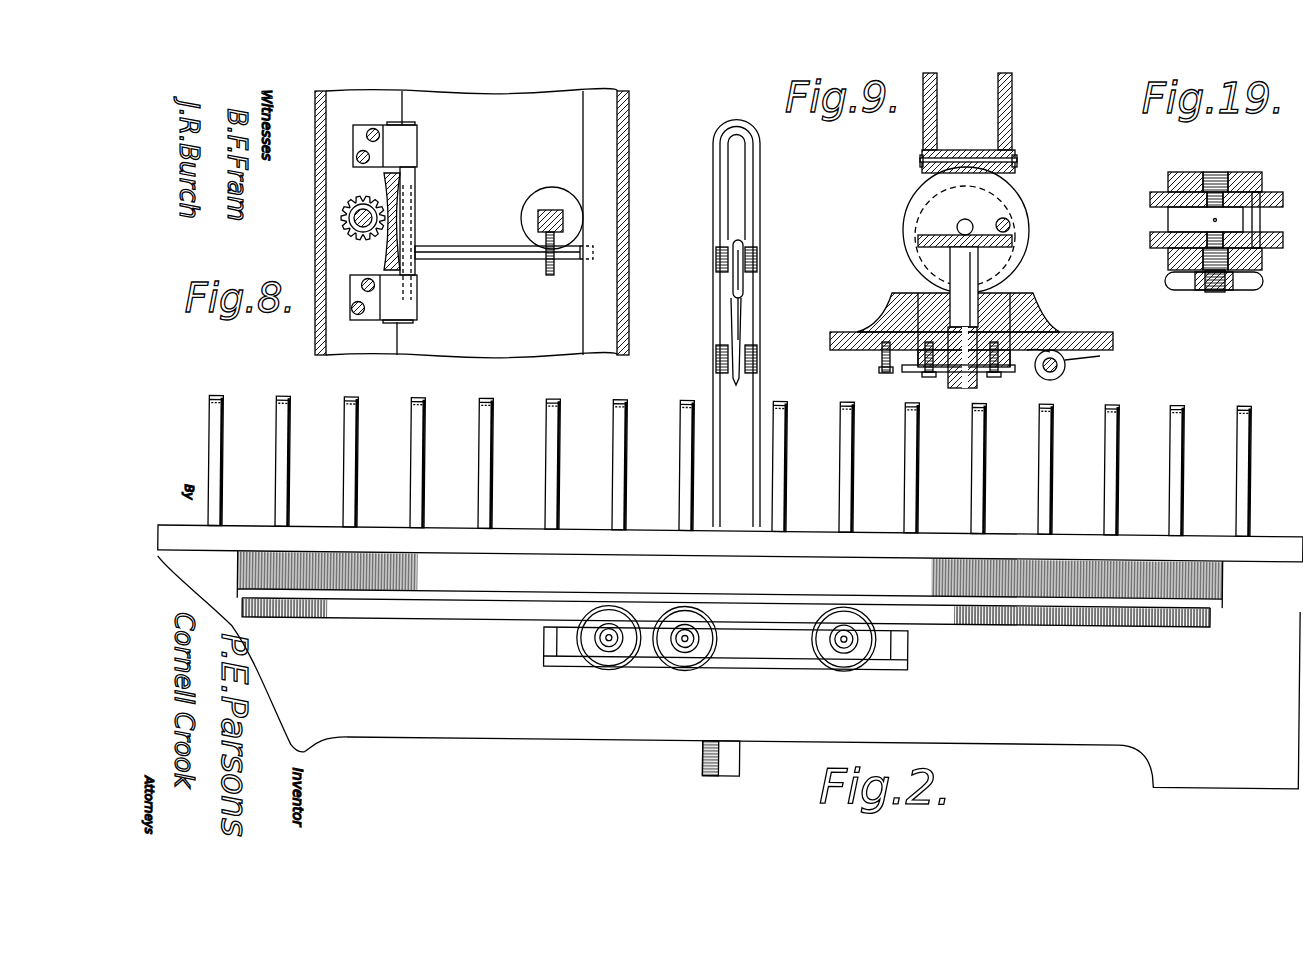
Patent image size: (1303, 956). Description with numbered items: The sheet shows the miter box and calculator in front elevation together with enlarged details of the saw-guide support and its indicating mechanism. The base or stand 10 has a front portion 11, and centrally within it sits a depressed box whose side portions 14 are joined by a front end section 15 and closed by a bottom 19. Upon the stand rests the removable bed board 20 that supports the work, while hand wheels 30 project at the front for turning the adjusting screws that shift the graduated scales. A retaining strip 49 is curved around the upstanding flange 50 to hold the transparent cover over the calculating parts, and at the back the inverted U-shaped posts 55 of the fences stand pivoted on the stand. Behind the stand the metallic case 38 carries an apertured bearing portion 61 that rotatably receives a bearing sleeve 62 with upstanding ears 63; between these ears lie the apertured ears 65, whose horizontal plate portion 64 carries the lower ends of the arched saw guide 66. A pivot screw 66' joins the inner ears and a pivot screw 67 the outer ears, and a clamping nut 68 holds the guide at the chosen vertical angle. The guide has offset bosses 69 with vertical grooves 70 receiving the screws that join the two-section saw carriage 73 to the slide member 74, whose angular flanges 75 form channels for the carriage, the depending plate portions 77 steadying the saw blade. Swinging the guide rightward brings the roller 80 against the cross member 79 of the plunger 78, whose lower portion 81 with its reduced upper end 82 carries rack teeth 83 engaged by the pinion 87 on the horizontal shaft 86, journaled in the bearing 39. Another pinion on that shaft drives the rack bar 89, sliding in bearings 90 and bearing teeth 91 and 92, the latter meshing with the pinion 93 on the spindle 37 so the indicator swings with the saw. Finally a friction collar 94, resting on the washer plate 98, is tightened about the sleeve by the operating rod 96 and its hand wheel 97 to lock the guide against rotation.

In FIG. 2, the base or stand 10 is at (517, 748).
In FIG. 2, the front portion 11 is at (1072, 714).
In FIG. 2, the side portions 14 is at (550, 625).
In FIG. 2, the front end section 15 is at (768, 644).
In FIG. 2, the bottom 19 is at (799, 650).
In FIG. 2, the bed board 20 is at (377, 531).
In FIG. 2, the hand wheels 30 is at (605, 664).
In FIG. 8, the spindle or shaft 37 is at (347, 208).
In FIG. 8, the metallic case or housing 38 is at (563, 323).
In FIG. 9, the metallic case or housing 38 is at (845, 332).
In FIG. 8, the bearing 39 is at (603, 233).
In FIG. 2, the retaining strip 49 is at (730, 589).
In FIG. 2, the upstanding flange 50 is at (448, 610).
In FIG. 2, the posts 55 is at (484, 438).
In FIG. 9, the bearing portion 61 is at (1038, 328).
In FIG. 9, the bearing sleeve 62 is at (1003, 322).
In FIG. 9, the ears 63 is at (928, 288).
In FIG. 19, the ears 63 is at (1255, 178).
In FIG. 9, the horizontal plate portion 64 is at (967, 148).
In FIG. 9, the apertured ears 65 is at (1020, 205).
In FIG. 19, the apertured ears 65 is at (1160, 230).
In FIG. 9, the saw guide 66 is at (872, 203).
In FIG. 19, the pivot screw 66' is at (1236, 173).
In FIG. 19, the pivot screw 67 is at (1220, 292).
In FIG. 19, the clamping nut 68 is at (1240, 282).
In FIG. 9, the bosses or ribs 69 is at (757, 172).
In FIG. 9, the vertical grooves 70 is at (937, 88).
In FIG. 9, the saw guide or carriage 73 is at (745, 280).
In FIG. 9, the slide member 74 is at (742, 240).
In FIG. 9, the angular flanges 75 is at (757, 258).
In FIG. 9, the plate portions 77 is at (730, 315).
In FIG. 9, the plunger 78 is at (963, 282).
In FIG. 9, the cross member 79 is at (1012, 242).
In FIG. 19, the cross member 79 is at (1180, 215).
In FIG. 9, the roller 80 is at (1010, 227).
In FIG. 19, the roller 80 is at (1265, 221).
In FIG. 8, the lower portion 81 is at (548, 210).
In FIG. 9, the reduced upper end 82 is at (938, 367).
In FIG. 8, the rack teeth 83 is at (538, 222).
In FIG. 8, the horizontal shaft 86 is at (508, 259).
In FIG. 8, the pinion 87 is at (552, 277).
In FIG. 2, the pinion 87 is at (704, 758).
In FIG. 8, the rack bar 89 is at (415, 188).
In FIG. 8, the bearings 90 is at (410, 142).
In FIG. 8, the teeth 91 is at (417, 270).
In FIG. 8, the teeth 92 is at (388, 203).
In FIG. 8, the pinion 93 is at (340, 219).
In FIG. 9, the friction collar or clamp 94 is at (1075, 362).
In FIG. 9, the operating rod 96 is at (1055, 370).
In FIG. 2, the hand wheel 97 is at (691, 658).
In FIG. 9, the washer plate 98 is at (1013, 365).